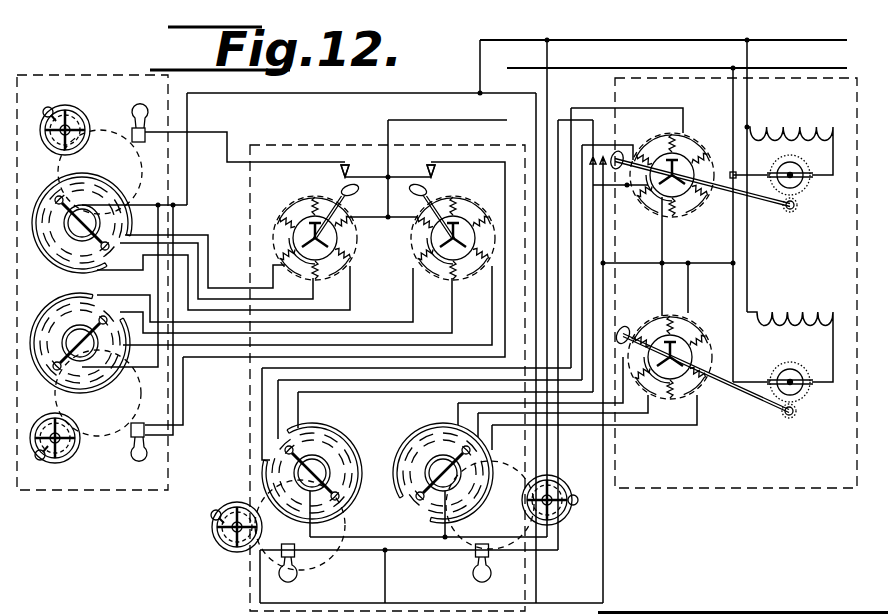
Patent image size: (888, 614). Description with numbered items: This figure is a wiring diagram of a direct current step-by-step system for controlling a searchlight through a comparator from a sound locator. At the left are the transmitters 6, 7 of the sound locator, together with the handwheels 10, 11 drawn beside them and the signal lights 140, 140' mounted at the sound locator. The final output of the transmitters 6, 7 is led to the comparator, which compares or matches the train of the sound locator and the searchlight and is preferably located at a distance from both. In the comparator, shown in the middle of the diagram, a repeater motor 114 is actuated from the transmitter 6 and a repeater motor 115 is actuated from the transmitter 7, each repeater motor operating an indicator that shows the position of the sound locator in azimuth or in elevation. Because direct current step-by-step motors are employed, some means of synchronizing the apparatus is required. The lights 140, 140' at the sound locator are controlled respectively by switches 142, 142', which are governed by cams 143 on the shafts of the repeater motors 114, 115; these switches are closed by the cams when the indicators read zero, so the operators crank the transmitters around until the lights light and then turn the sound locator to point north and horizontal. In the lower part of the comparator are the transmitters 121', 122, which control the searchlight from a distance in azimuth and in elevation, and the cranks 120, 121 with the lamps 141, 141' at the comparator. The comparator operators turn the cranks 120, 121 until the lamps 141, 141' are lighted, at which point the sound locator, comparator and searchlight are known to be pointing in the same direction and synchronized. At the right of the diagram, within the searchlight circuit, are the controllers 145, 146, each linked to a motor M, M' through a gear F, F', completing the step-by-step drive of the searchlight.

The transmitter 6 is at (60, 246).
The transmitter 7 is at (68, 315).
The hand wheel 10 is at (47, 109).
The hand wheel 11 is at (42, 460).
The repeater motor 114 is at (290, 244).
The repeater motor 115 is at (428, 243).
The crank 120 is at (222, 510).
The crank 121 is at (563, 511).
The transmitter 121' is at (323, 459).
The transmitter 122 is at (437, 447).
The signal light 140 is at (120, 113).
The signal light 140' is at (116, 455).
The signal lamp 141 is at (311, 573).
The signal lamp 141' is at (454, 570).
The switch 142 is at (344, 159).
The switch 142' is at (447, 159).
The cam 143 is at (428, 188).
The motor controller 145 is at (682, 155).
The motor controller 146 is at (667, 387).
The motor M is at (799, 181).
The motor M' is at (793, 370).
The pinion gear F is at (801, 221).
The pinion gear F' is at (803, 422).